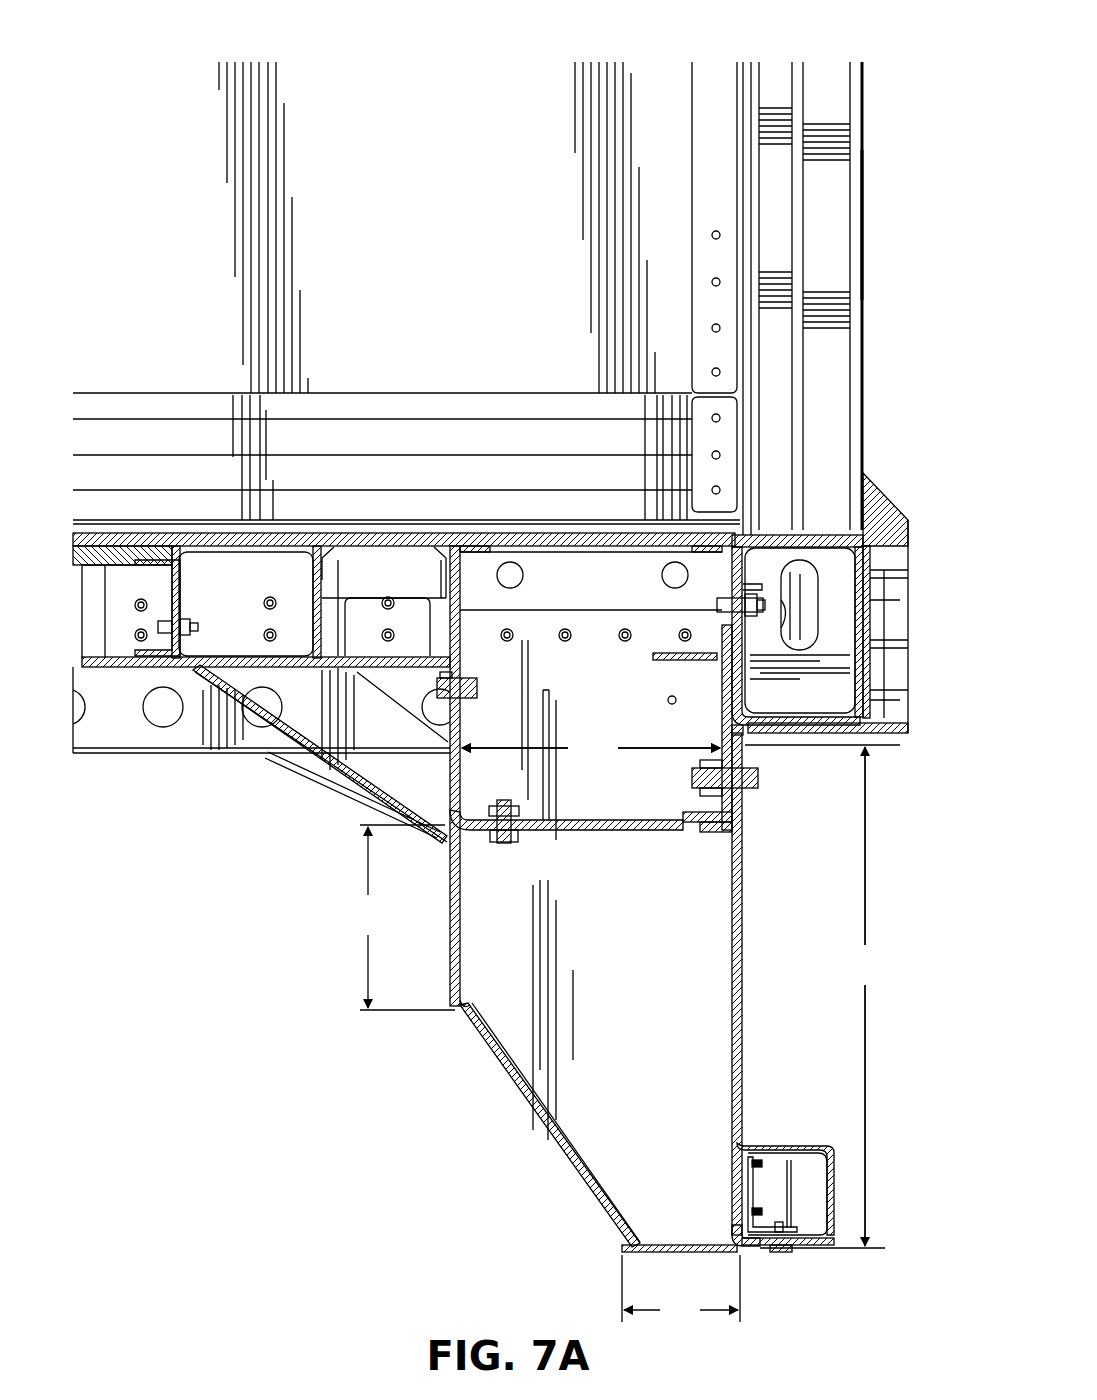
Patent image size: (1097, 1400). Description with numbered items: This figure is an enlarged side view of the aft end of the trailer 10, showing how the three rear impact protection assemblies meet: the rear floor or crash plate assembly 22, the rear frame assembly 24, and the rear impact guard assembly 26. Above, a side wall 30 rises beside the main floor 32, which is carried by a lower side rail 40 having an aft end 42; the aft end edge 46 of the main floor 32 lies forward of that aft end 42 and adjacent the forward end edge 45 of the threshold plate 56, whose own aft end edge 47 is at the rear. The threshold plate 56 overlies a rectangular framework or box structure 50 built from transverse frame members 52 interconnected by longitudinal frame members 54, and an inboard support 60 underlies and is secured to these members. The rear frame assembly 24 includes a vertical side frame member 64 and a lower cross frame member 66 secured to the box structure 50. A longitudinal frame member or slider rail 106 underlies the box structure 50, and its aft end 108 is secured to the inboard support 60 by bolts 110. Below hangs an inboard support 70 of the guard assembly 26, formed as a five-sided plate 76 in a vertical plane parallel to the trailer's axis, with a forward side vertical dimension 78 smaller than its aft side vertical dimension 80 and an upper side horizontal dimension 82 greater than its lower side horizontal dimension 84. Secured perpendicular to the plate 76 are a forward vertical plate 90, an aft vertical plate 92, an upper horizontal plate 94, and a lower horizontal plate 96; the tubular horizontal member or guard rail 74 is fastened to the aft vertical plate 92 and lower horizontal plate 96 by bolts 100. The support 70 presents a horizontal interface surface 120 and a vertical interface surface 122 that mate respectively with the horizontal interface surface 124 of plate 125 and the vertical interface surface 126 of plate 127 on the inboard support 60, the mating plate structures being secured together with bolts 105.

The trailer 10 is at (884, 46).
The rear floor or crash plate assembly 22 is at (458, 478).
The rear frame assembly 24 is at (868, 136).
The rear impact guard assembly 26 is at (780, 887).
The side wall 30 is at (412, 176).
The main floor 32 is at (100, 534).
The lower side rail 40 is at (462, 393).
The aft end of lower side rail 42 is at (740, 393).
The forward end edge of threshold plate 45 is at (180, 533).
The aft end edge of main floor 46 is at (173, 533).
The aft end edge of threshold plate 47 is at (740, 540).
The rectangular framework or sub frame or box structure 50 is at (380, 532).
The transverse frame member 52 is at (307, 580).
The longitudinal frame member 54 is at (366, 585).
The threshold plate 56 is at (566, 533).
The inboard support 60 is at (463, 716).
The vertical side frame member 64 is at (864, 276).
The lower cross frame member 66 is at (863, 544).
The inboard support 70 is at (340, 765).
The horizontal member or guard rail 74 is at (786, 1146).
The five-sided plate 76 is at (608, 1020).
The forward side vertical dimension 78 is at (403, 917).
The aft side vertical dimension 80 is at (822, 996).
The upper side horizontal dimension 82 is at (591, 748).
The lower side horizontal dimension 84 is at (681, 1290).
The forward vertical plate 90 is at (460, 917).
The aft vertical plate 92 is at (742, 925).
The upper horizontal plate 94 is at (640, 830).
The lower horizontal plate 96 is at (660, 1252).
The bolt 100 is at (730, 1210).
The bolt 105 is at (500, 842).
The longitudinal frame member or slider rail 106 is at (130, 753).
The aft end of slider rail 108 is at (448, 758).
The bolt 110 is at (475, 688).
The horizontal interface surface 120 is at (622, 818).
The vertical interface surface 122 is at (710, 832).
The horizontal interface surface 124 is at (585, 830).
The plate 125 is at (514, 817).
The vertical interface surface 126 is at (746, 740).
The plate 127 is at (448, 782).